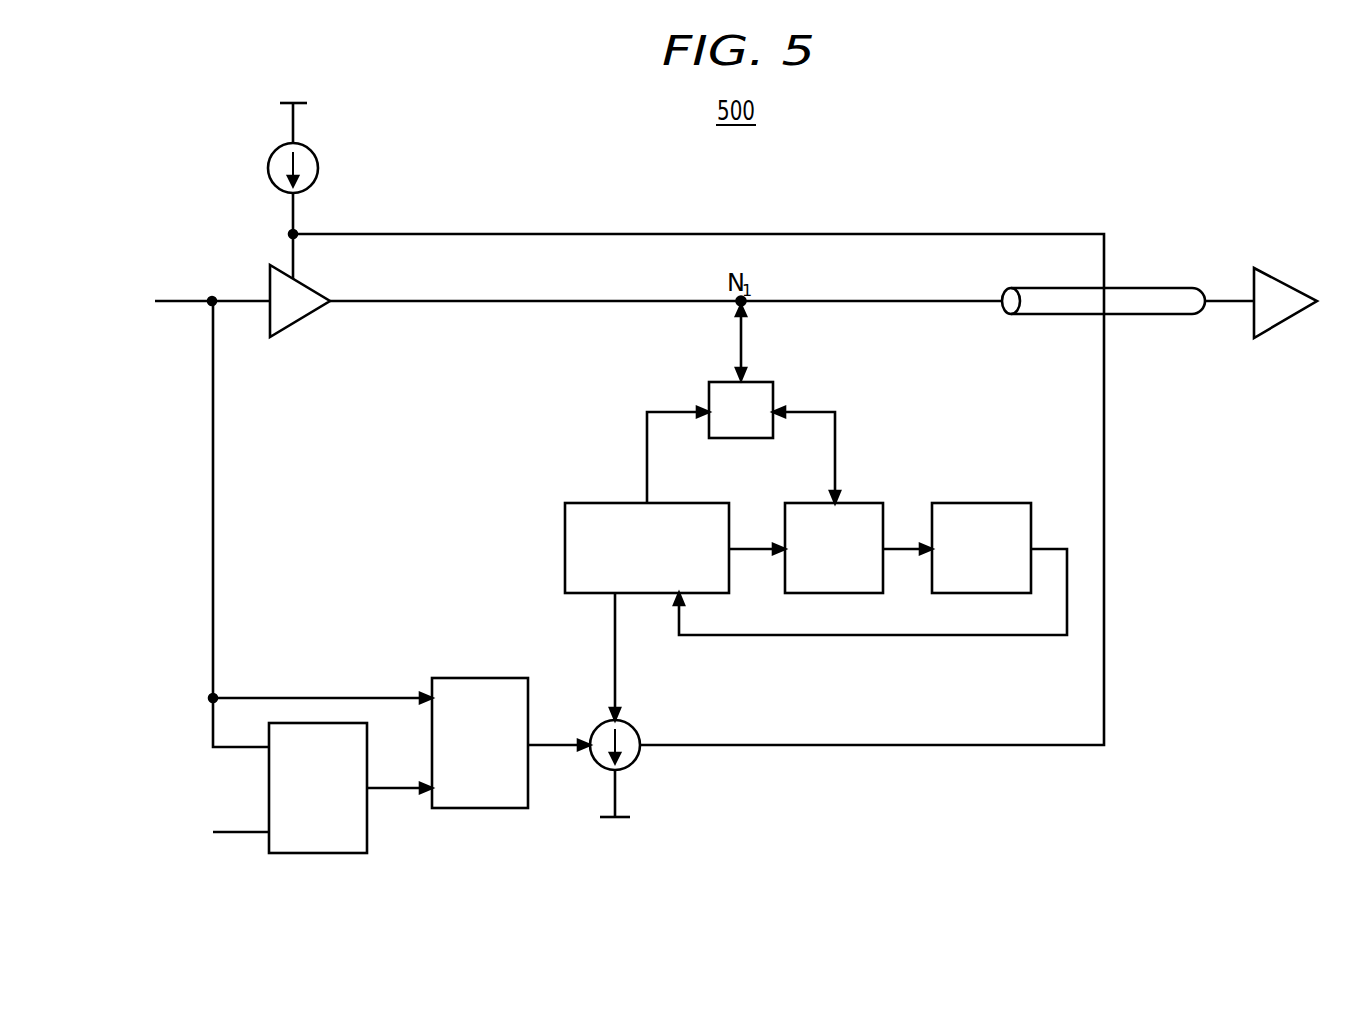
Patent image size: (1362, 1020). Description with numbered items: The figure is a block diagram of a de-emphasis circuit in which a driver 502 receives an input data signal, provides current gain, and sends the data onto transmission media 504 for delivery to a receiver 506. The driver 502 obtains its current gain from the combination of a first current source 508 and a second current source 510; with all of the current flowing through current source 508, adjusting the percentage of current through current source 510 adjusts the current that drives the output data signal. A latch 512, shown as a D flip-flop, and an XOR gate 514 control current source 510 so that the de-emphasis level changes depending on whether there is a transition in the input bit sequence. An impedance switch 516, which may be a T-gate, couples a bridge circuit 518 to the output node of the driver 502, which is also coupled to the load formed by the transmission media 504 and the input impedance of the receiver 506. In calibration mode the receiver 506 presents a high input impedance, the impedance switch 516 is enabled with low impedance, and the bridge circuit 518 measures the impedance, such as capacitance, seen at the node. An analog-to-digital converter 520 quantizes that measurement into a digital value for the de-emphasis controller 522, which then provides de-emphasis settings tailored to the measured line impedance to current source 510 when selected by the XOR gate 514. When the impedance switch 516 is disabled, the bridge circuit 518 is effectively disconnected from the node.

The driver 502 is at (268, 281).
The transmission (TX) media 504 is at (1140, 289).
The receiver (RX) 506 is at (1283, 282).
The current source 508 is at (318, 168).
The current source 510 is at (635, 729).
The latch 512 is at (318, 853).
The XOR gate 514 is at (485, 678).
The impedance switch (Zx) 516 is at (767, 381).
The bridge circuit 518 is at (850, 503).
The analog-to-digital (A/D) converter 520 is at (970, 503).
The de-emphasis controller 522 is at (680, 503).